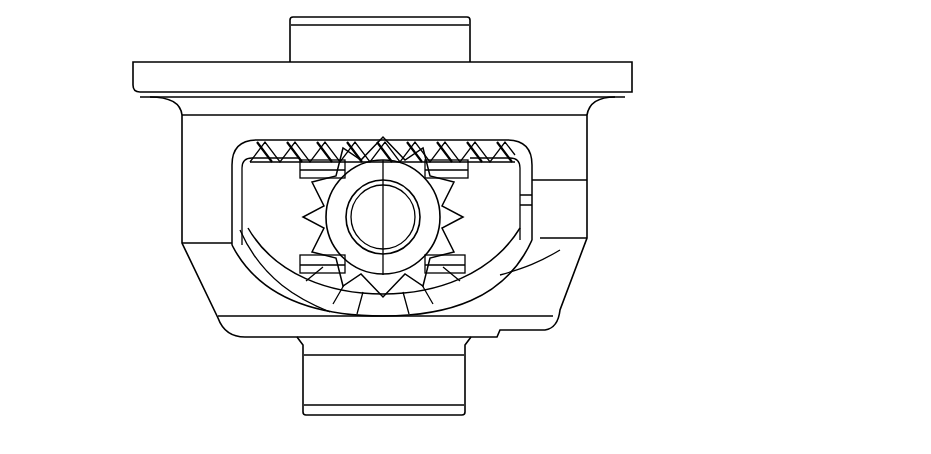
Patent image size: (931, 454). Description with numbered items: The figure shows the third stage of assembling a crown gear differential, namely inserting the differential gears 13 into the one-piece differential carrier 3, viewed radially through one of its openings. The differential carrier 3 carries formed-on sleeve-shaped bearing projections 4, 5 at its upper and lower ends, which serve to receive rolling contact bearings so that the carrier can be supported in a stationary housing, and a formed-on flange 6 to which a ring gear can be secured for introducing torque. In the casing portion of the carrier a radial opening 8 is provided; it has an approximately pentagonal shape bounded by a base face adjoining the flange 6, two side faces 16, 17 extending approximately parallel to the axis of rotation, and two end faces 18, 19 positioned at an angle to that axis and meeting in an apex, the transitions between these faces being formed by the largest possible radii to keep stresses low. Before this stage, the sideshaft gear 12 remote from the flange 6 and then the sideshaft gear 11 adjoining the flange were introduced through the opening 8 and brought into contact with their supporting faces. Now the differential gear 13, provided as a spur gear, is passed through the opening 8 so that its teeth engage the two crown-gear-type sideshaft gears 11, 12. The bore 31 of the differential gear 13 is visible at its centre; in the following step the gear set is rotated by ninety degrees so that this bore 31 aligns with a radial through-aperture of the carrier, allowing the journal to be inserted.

The differential carrier 3 is at (104, 87).
The bearing projection 4 is at (465, 40).
The bearing projection 5 is at (447, 392).
The flange 6 is at (624, 78).
The radial opening 8 is at (515, 214).
The sideshaft gear 11 is at (535, 143).
The sideshaft gear 12 is at (520, 258).
The differential gear 13 is at (307, 237).
The side face 16 is at (540, 181).
The side face 17 is at (232, 196).
The end face 18 is at (470, 286).
The end face 19 is at (312, 292).
The bore 31 is at (352, 205).